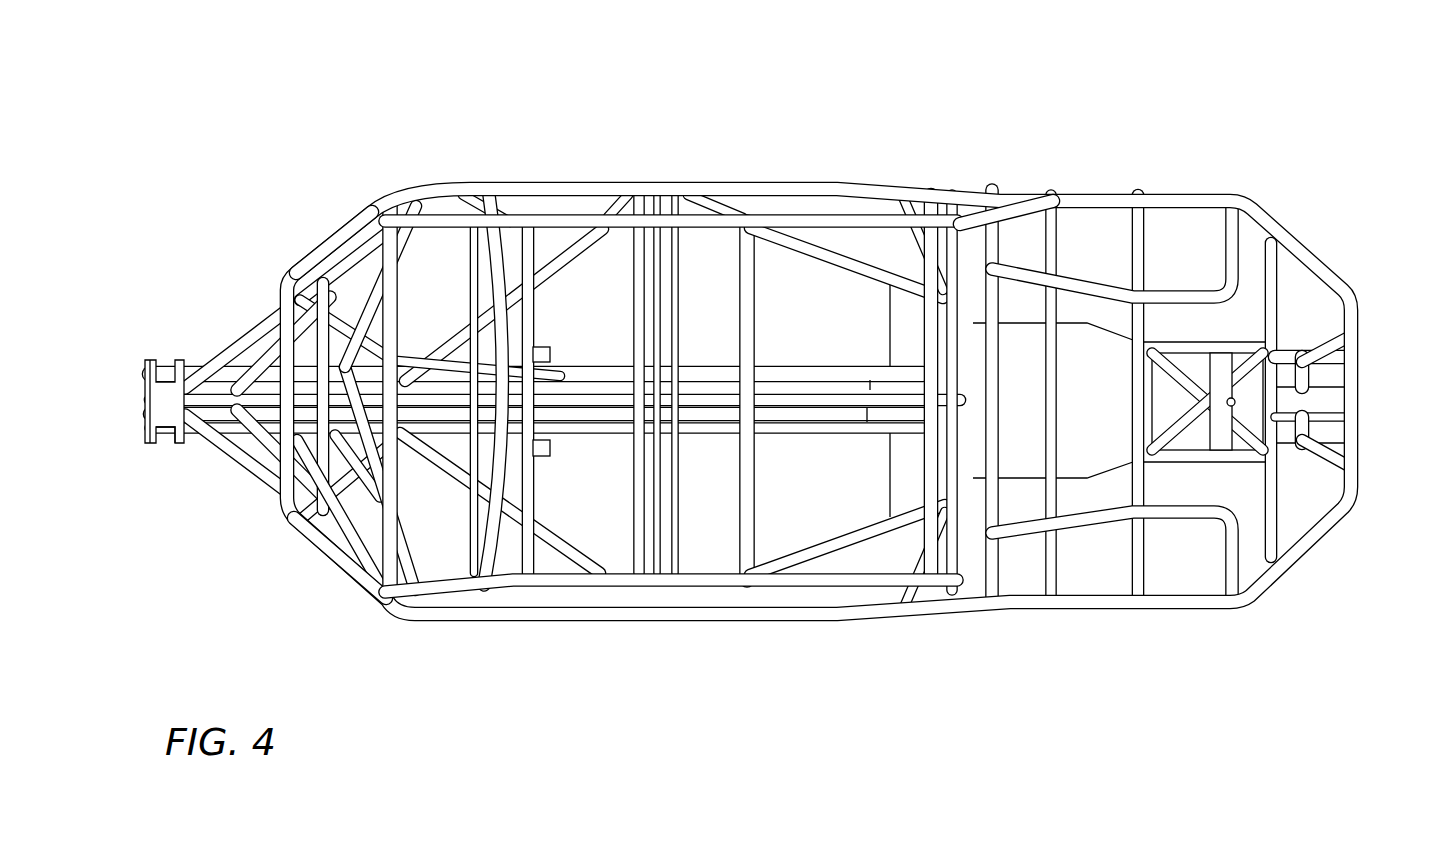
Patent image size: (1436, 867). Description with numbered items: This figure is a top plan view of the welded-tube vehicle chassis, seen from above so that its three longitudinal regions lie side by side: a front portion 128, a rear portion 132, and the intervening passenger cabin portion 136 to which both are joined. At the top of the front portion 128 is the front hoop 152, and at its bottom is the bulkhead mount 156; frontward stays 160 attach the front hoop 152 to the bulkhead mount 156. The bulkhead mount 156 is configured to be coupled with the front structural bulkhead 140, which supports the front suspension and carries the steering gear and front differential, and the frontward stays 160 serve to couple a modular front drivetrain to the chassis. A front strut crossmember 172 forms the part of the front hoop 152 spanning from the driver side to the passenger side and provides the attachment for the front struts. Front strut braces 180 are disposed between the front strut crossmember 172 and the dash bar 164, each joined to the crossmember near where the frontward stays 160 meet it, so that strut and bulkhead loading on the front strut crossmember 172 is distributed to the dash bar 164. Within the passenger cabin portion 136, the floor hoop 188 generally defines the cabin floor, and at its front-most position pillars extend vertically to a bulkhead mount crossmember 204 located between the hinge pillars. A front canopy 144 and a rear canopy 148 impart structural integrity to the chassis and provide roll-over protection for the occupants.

The front portion 128 is at (200, 237).
The rear portion 132 is at (1378, 467).
The passenger cabin portion 136 is at (758, 642).
The front structural bulkhead 140 is at (167, 428).
The front canopy 144 is at (520, 228).
The rear canopy 148 is at (958, 227).
The front hoop 152 is at (347, 230).
The bulkhead mount 156 is at (155, 398).
The frontward stays 160 is at (266, 345).
The dash bar 164 is at (390, 298).
The front strut crossmember 172 is at (343, 548).
The front strut braces 180 is at (337, 315).
The floor hoop 188 is at (495, 607).
The bulkhead mount crossmember 204 is at (343, 555).